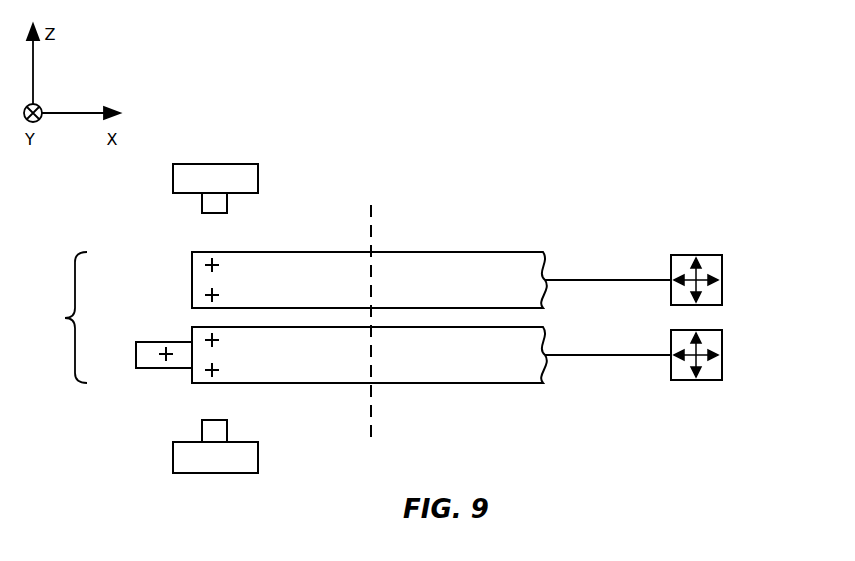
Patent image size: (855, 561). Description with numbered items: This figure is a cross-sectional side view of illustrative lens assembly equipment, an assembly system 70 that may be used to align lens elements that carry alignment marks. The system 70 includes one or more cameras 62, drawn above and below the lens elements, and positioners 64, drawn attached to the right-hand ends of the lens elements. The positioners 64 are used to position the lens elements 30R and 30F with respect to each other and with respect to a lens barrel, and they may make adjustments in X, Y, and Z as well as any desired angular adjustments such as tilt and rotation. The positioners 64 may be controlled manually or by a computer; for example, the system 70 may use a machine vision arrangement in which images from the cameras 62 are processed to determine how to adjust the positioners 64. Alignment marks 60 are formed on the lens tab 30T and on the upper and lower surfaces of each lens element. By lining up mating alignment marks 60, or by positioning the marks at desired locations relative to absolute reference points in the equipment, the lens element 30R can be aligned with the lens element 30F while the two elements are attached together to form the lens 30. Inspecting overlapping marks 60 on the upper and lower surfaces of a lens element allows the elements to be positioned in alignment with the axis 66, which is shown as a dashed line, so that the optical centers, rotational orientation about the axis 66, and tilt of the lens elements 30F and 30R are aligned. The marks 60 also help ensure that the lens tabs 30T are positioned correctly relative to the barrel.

The lens 30 is at (292, 323).
The lens element 30R is at (508, 272).
The lens element 30F is at (508, 373).
The lens tab 30T is at (148, 365).
The alignment mark 60 is at (216, 293).
The camera 62 is at (248, 181).
The positioner 64 is at (722, 268).
The axis 66 is at (372, 228).
The assembly system 70 is at (673, 131).